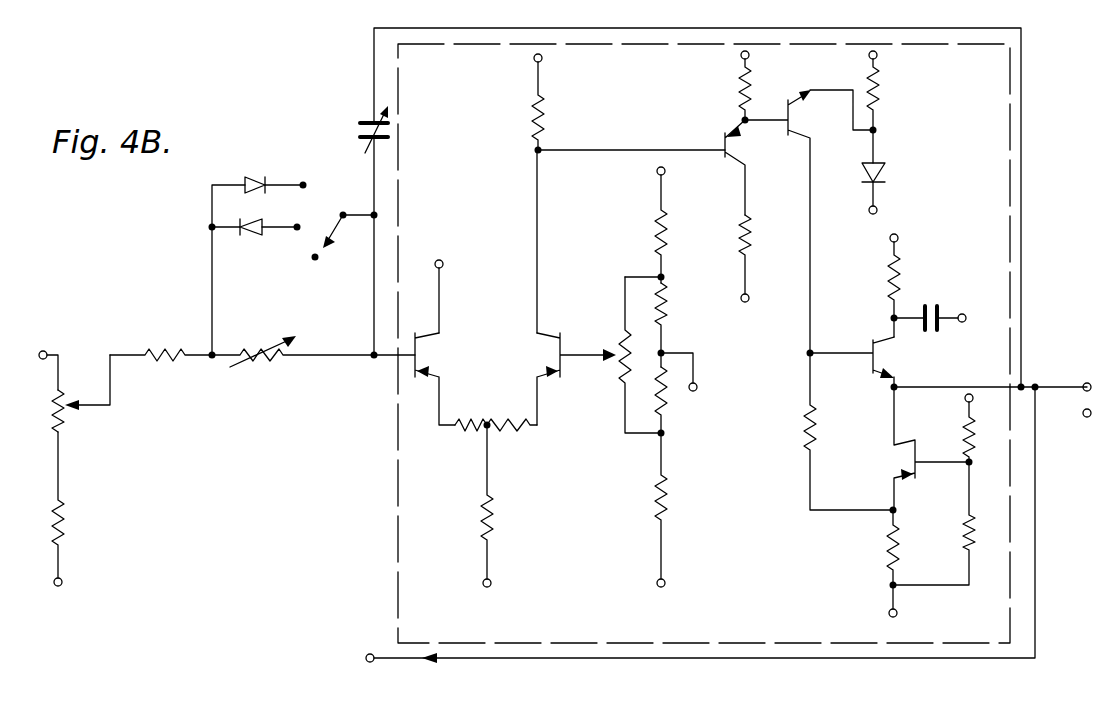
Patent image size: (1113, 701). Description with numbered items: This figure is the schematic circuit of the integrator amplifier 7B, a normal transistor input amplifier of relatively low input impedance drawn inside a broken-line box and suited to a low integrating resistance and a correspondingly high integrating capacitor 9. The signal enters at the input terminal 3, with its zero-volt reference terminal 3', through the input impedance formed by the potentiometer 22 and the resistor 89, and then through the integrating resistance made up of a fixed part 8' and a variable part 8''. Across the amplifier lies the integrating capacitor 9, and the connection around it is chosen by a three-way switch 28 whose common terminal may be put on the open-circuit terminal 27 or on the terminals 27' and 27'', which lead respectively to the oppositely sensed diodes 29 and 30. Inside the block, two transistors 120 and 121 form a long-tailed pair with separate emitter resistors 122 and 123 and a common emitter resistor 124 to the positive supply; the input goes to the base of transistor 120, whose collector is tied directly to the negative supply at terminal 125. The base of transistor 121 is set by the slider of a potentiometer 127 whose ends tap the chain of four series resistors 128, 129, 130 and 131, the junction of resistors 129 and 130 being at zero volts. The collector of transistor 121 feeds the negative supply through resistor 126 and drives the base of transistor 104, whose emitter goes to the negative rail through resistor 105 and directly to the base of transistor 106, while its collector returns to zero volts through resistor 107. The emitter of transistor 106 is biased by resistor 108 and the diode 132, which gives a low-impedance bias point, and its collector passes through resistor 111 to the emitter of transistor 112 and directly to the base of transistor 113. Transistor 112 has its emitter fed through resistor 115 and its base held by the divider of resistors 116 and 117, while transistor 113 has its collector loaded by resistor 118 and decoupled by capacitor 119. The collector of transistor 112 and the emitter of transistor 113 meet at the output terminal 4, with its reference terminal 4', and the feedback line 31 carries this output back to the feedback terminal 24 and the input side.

The input terminal 3 is at (48, 355).
The input reference terminal 3' is at (78, 589).
The input impedance potentiometer 22 is at (66, 430).
The input impedance resistor 89 is at (66, 510).
The fixed part of integrating resistance 8' is at (161, 377).
The variable part of integrating resistance 8'' is at (293, 370).
The diode 30 is at (255, 178).
The diode 29 is at (252, 236).
The open-circuit terminal 27 is at (335, 273).
The switch terminal 27' is at (313, 210).
The switch terminal 27'' is at (316, 157).
The three-way switch 28 is at (344, 211).
The integrating capacitor 9 is at (372, 118).
The integrator amplifier 7B is at (990, 105).
The feedback terminal 24 is at (370, 655).
The output terminal 4 is at (992, 375).
The output reference terminal 4' is at (1071, 421).
The feedback line 31 is at (1037, 462).
The resistor 105 is at (738, 86).
The transistor 104 is at (714, 147).
The transistor 106 is at (786, 124).
The resistor 107 is at (750, 232).
The resistor 108 is at (882, 88).
The diode 132 is at (880, 162).
The resistor 118 is at (902, 287).
The capacitor 119 is at (940, 308).
The transistor 113 is at (872, 343).
The resistor 111 is at (816, 428).
The transistor 112 is at (916, 459).
The resistor 117 is at (966, 446).
The resistor 115 is at (898, 546).
The resistor 116 is at (967, 526).
The supply terminal 125 is at (439, 260).
The resistor 126 is at (544, 112).
The transistor 120 is at (415, 334).
The transistor 121 is at (561, 334).
The emitter resistor 122 is at (473, 413).
The emitter resistor 123 is at (508, 432).
The common emitter resistor 124 is at (493, 516).
The potentiometer 127 is at (622, 344).
The resistor 128 is at (666, 219).
The resistor 129 is at (668, 311).
The resistor 130 is at (668, 416).
The resistor 131 is at (668, 506).